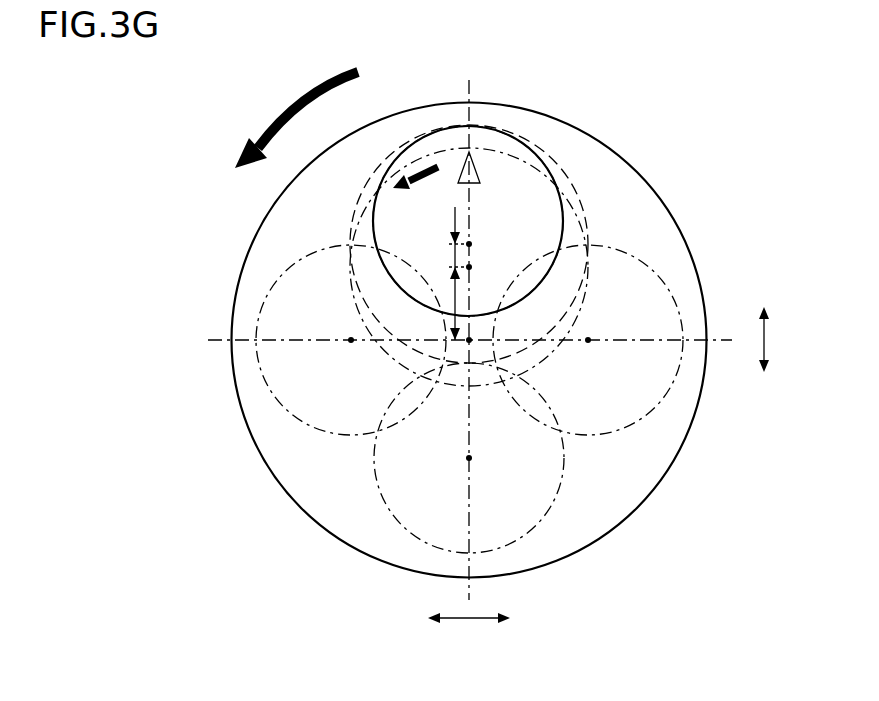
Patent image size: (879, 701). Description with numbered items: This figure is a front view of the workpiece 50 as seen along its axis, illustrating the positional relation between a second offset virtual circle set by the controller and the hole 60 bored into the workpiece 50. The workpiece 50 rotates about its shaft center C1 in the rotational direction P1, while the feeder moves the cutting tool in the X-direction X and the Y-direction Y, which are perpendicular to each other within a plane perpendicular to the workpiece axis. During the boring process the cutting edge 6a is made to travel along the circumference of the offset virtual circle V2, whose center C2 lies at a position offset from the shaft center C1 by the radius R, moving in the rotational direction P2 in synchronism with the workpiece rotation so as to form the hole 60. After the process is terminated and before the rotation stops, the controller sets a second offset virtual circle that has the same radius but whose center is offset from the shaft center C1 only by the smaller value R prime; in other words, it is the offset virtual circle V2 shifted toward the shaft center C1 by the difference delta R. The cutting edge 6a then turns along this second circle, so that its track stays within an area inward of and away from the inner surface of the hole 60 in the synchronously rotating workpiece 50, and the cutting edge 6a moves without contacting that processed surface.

The cutting edge 6a is at (468, 152).
The workpiece 50 is at (668, 203).
The hole 60 is at (497, 143).
The offset virtual circle V2 is at (552, 157).
The shaft center C1 is at (466, 342).
The center of the offset virtual circle C2 is at (469, 244).
The rotational direction P1 is at (297, 105).
The rotational direction P2 is at (430, 169).
The X-direction X is at (467, 623).
The Y-direction Y is at (764, 340).